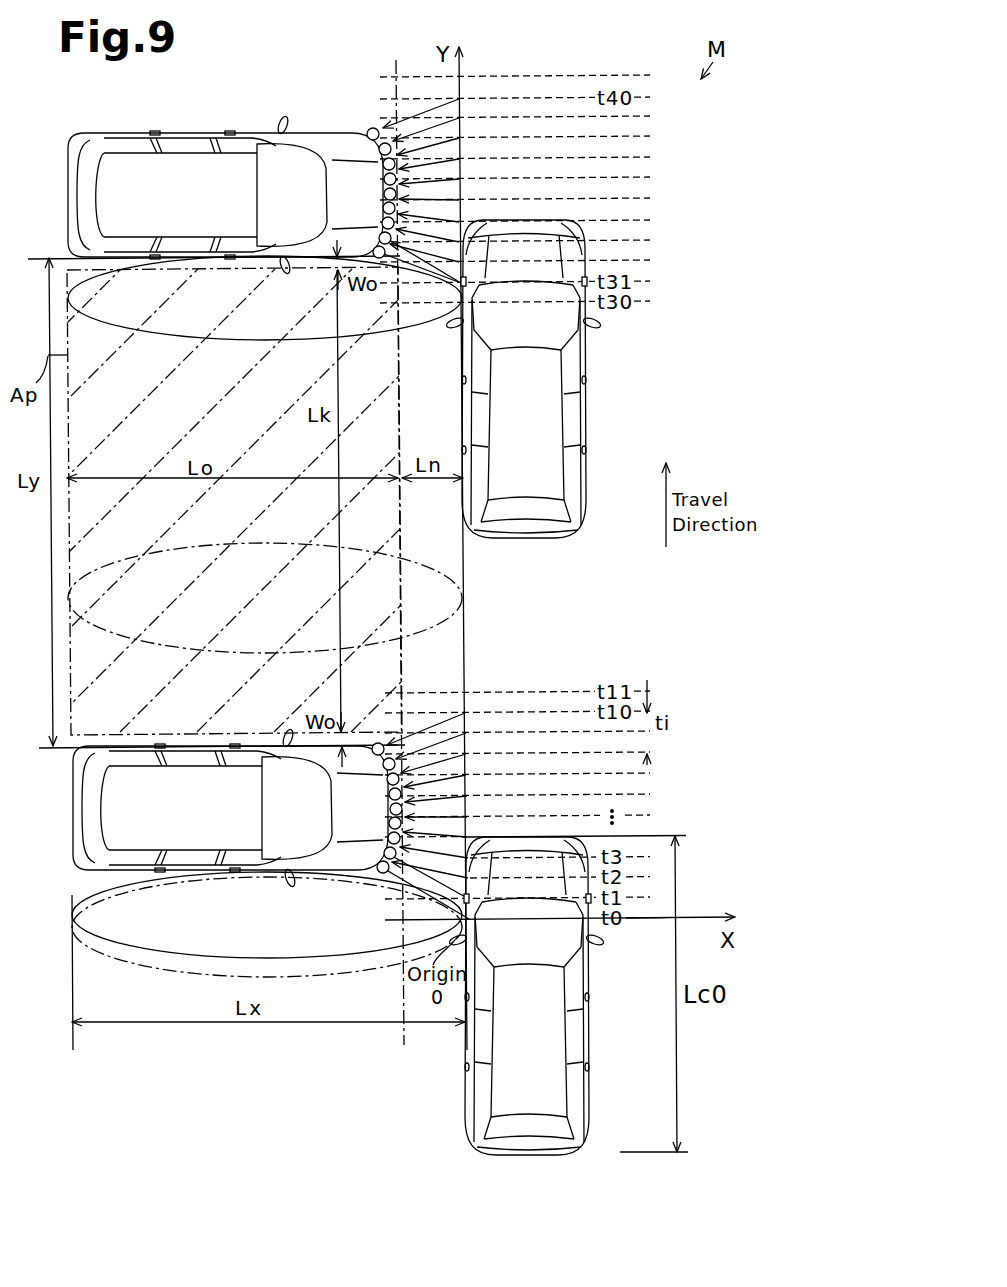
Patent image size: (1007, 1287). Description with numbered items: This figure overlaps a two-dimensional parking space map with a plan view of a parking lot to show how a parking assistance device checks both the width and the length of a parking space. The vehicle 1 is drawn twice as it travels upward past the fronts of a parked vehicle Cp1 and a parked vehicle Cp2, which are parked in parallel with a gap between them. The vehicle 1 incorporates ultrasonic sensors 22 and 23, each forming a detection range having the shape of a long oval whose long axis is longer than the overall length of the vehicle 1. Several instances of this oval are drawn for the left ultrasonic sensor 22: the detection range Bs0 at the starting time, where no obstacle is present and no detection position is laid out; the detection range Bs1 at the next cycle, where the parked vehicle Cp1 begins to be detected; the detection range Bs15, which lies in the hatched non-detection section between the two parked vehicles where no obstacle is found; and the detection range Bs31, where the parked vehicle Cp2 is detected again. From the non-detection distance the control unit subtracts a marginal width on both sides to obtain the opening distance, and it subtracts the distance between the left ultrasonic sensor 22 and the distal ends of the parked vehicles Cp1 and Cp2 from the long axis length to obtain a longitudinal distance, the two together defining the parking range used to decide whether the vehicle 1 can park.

The vehicle 1 is at (588, 428).
The left ultrasonic sensor 22 is at (468, 284).
The ultrasonic sensor 23 is at (590, 292).
The parked vehicle Cp1 is at (188, 746).
The parked vehicle Cp2 is at (190, 133).
The detection range at time t0 Bs0 is at (165, 972).
The detection range at time t1 Bs1 is at (78, 890).
The detection range at time t15 Bs15 is at (125, 559).
The detection range at time t31 Bs31 is at (110, 327).